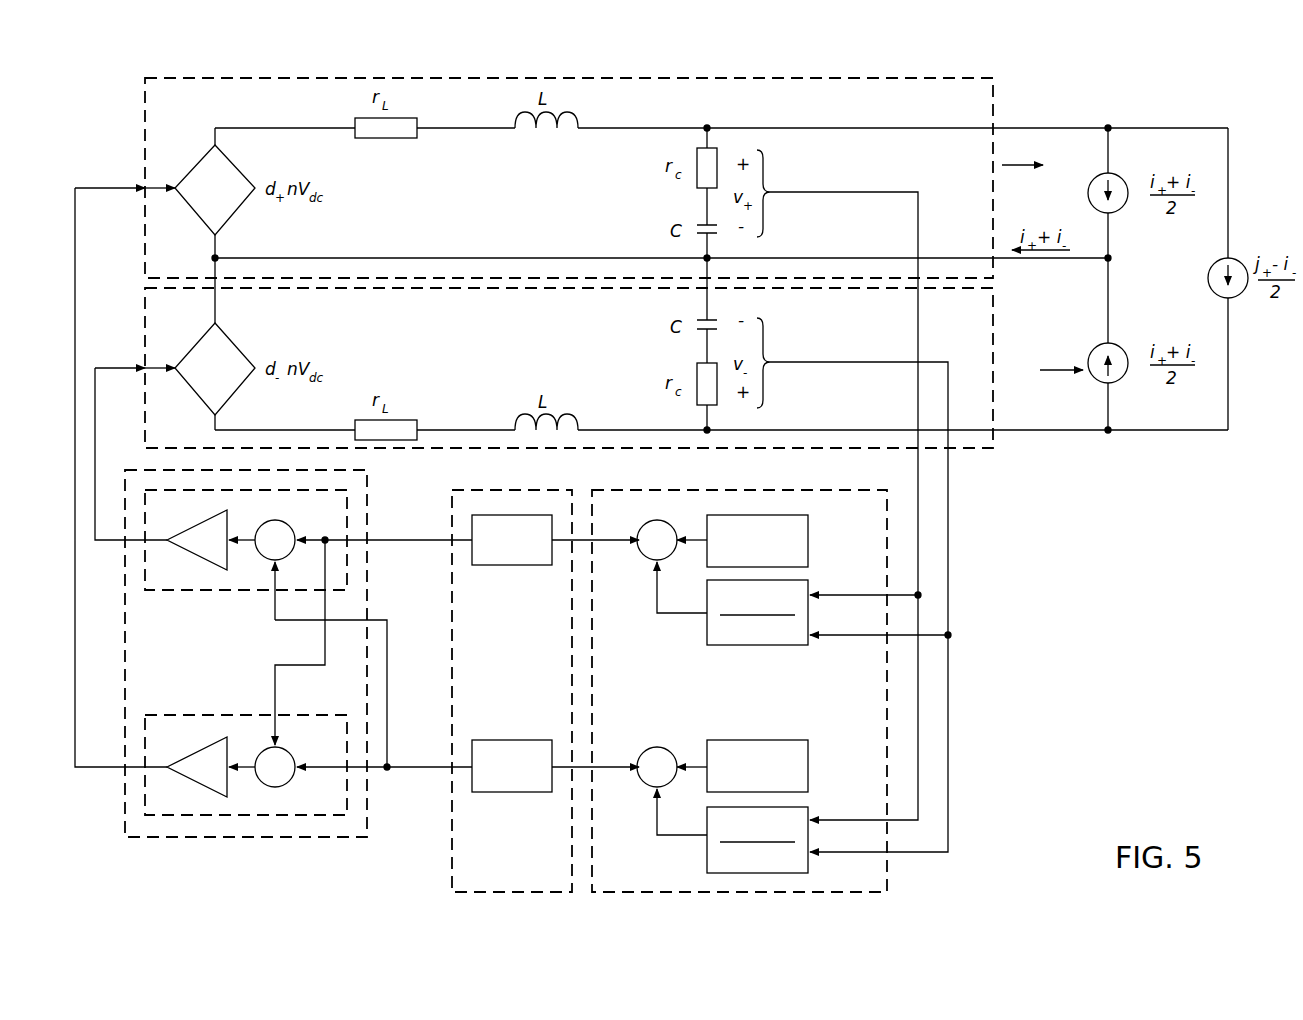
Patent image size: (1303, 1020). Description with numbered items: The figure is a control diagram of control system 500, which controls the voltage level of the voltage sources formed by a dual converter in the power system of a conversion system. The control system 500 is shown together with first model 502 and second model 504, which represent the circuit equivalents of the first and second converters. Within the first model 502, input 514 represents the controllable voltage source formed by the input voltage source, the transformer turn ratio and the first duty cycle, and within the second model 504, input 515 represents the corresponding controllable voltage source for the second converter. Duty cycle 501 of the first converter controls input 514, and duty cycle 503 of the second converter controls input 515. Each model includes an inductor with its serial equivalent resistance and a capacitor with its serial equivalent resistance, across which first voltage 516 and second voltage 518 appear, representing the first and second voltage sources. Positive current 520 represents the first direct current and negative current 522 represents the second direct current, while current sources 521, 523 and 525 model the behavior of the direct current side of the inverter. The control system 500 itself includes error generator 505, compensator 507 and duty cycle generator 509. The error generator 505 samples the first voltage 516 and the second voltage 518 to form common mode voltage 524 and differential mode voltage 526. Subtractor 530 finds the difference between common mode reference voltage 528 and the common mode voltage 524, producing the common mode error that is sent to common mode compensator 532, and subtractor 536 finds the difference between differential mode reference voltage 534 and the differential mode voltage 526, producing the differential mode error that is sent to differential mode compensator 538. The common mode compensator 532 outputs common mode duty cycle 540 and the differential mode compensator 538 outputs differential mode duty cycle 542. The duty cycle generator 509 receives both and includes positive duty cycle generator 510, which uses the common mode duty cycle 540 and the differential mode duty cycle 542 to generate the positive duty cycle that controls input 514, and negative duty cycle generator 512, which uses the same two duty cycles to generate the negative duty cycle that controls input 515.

The control system 500 is at (1027, 672).
The duty cycle 501 is at (128, 168).
The first model 502 is at (143, 104).
The duty cycle 503 is at (128, 348).
The second model 504 is at (965, 455).
The error generator 505 is at (888, 858).
The compensator 507 is at (450, 858).
The duty cycle generator 509 is at (123, 786).
The positive duty cycle generator 510 is at (220, 712).
The negative duty cycle generator 512 is at (198, 598).
The input 514 is at (198, 162).
The input 515 is at (198, 350).
The first voltage 516 is at (770, 172).
The second voltage 518 is at (770, 342).
The positive current 520 is at (1028, 178).
The current source 521 is at (1094, 180).
The negative current 522 is at (1062, 380).
The current source 523 is at (1094, 350).
The common mode voltage 524 is at (705, 628).
The current source 525 is at (1214, 263).
The differential mode voltage 526 is at (705, 853).
The common mode reference voltage 528 is at (810, 556).
The subtractor 530 is at (646, 563).
The common mode compensator 532 is at (510, 568).
The differential mode reference voltage 534 is at (810, 781).
The subtractor 536 is at (646, 790).
The differential mode compensator 538 is at (510, 795).
The common mode duty cycle 540 is at (435, 548).
The differential mode duty cycle 542 is at (435, 775).